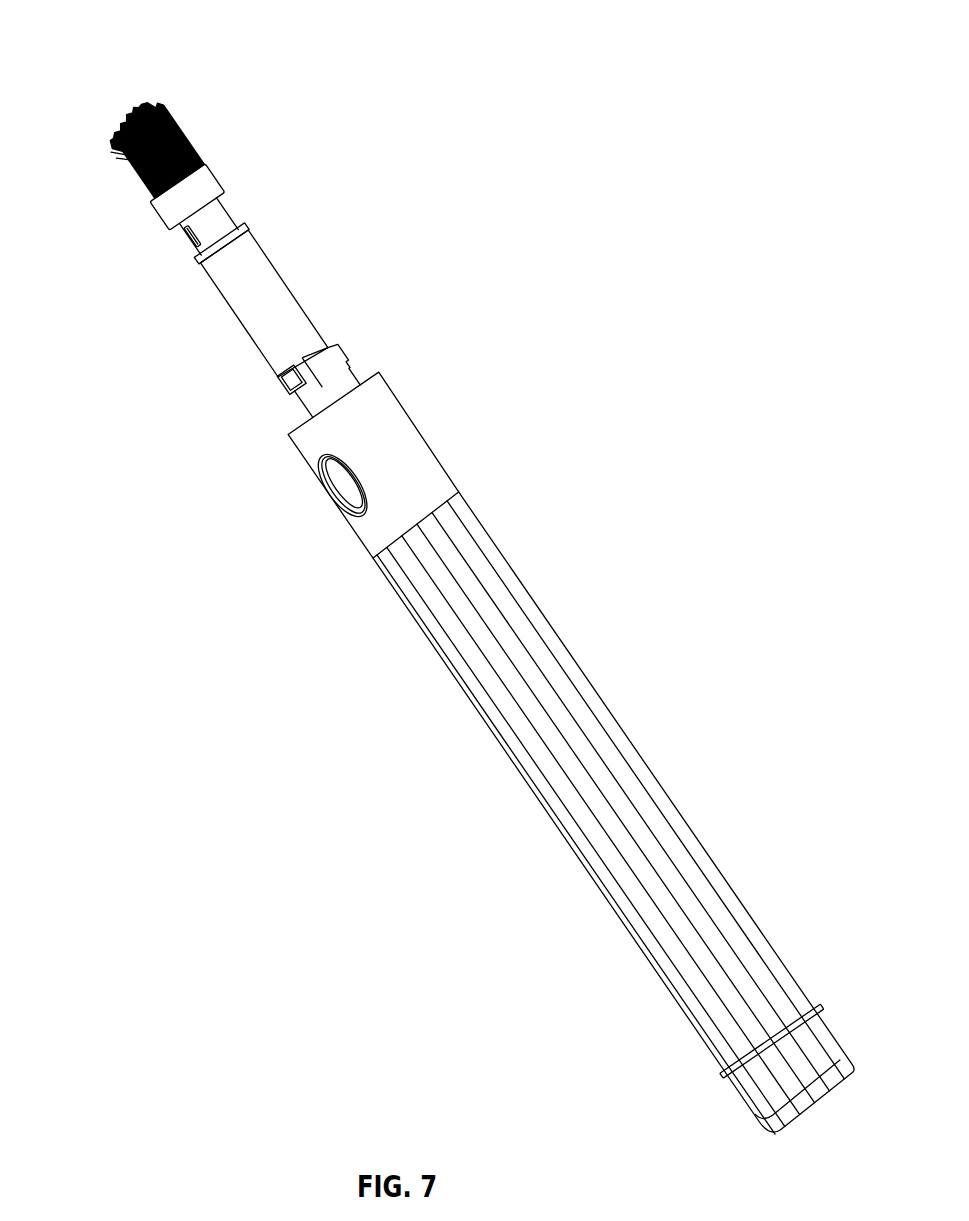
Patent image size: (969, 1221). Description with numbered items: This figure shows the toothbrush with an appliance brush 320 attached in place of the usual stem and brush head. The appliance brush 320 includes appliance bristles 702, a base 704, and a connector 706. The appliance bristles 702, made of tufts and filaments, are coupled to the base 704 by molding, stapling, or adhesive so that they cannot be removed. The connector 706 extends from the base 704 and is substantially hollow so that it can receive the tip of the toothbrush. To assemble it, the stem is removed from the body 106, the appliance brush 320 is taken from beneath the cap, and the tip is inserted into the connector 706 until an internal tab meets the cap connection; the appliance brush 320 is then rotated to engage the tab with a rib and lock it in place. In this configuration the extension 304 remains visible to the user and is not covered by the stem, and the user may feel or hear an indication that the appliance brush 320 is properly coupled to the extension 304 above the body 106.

The appliance brush 320 is at (178, 160).
The appliance bristles 702 is at (130, 167).
The base 704 is at (165, 214).
The connector 706 is at (218, 223).
The extension 304 is at (280, 298).
The body 106 is at (433, 430).